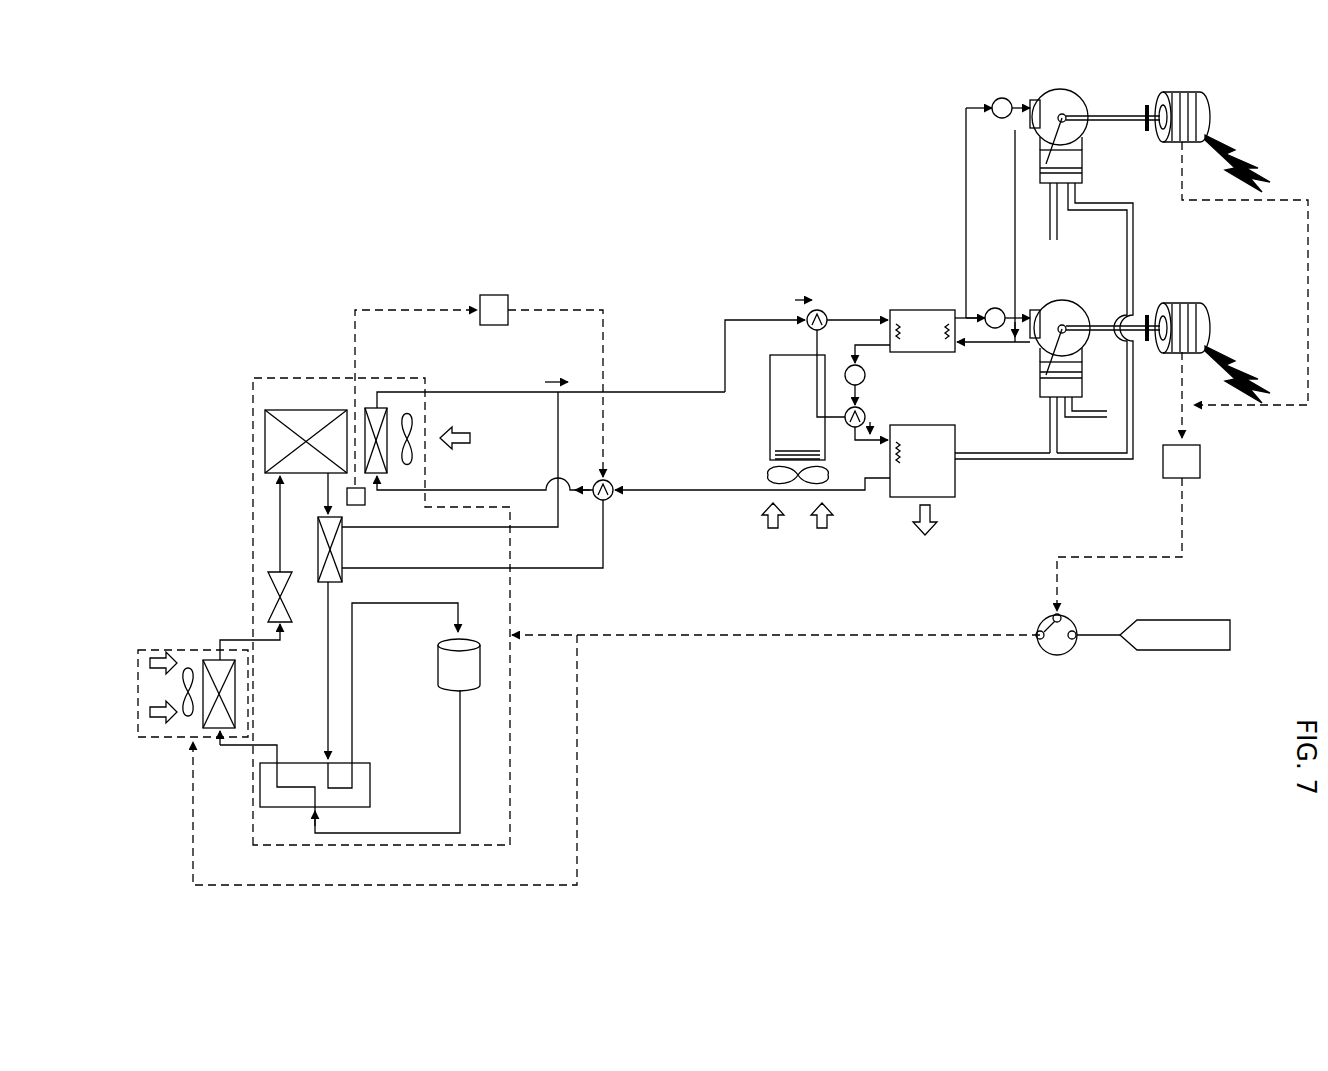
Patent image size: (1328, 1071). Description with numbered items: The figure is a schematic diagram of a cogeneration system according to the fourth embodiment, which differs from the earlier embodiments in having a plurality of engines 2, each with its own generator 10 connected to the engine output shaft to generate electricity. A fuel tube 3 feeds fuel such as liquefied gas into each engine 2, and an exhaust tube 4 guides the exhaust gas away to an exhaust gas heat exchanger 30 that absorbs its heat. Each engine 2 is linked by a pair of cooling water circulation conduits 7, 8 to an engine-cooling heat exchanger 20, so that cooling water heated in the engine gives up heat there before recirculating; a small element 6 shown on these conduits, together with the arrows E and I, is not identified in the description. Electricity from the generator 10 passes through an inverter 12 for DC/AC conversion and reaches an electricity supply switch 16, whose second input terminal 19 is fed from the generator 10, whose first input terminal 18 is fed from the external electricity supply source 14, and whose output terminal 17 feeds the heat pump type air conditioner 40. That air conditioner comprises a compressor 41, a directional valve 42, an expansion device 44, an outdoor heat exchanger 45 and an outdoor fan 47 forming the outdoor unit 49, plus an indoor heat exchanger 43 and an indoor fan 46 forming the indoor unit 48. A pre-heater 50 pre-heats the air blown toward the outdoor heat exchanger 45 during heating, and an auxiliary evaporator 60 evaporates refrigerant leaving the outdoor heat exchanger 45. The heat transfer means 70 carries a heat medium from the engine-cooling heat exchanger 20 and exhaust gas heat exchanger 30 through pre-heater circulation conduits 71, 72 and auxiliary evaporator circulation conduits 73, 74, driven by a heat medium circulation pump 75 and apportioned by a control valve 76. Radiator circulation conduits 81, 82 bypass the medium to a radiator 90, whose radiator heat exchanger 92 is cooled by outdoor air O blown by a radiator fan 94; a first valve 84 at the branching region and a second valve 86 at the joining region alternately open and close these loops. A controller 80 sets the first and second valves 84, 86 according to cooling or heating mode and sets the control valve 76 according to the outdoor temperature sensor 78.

The engine 2 is at (1068, 92).
The fuel tube 3 is at (1052, 240).
The exhaust tube 4 is at (1005, 460).
The temperature sensor 6 is at (1000, 98).
The cooling water circulation conduit 7 is at (1015, 185).
The cooling water circulation conduit 8 is at (966, 160).
The generator 10 is at (1178, 90).
The inverter 12 is at (1200, 455).
The external electricity supply source 14 is at (1183, 650).
The electricity supply switch 16 is at (1048, 655).
The output terminal 17 is at (1037, 632).
The first input terminal 18 is at (1074, 640).
The second input terminal 19 is at (1061, 617).
The engine-cooling heat exchanger 20 is at (907, 310).
The exhaust gas heat exchanger 30 is at (905, 497).
The heat pump type air conditioner 40 is at (176, 487).
The compressor 41 is at (440, 655).
The directional valve 42 is at (262, 807).
The indoor heat exchanger 43 is at (203, 728).
The expansion device 44 is at (268, 580).
The outdoor heat exchanger 45 is at (265, 440).
The indoor fan 46 is at (182, 660).
The outdoor fan 47 is at (407, 408).
The indoor unit 48 is at (195, 650).
The outdoor unit 49 is at (253, 392).
The pre-heater 50 is at (375, 408).
The auxiliary evaporator 60 is at (318, 550).
The heat transfer means 70 is at (617, 584).
The pre-heater circulation conduit 71 is at (735, 318).
The pre-heater circulation conduit 72 is at (665, 492).
The auxiliary evaporator circulation conduit 73 is at (583, 572).
The auxiliary evaporator circulation conduit 74 is at (558, 400).
The heat medium circulation pump 75 is at (865, 372).
The control valve 76 is at (612, 483).
The outdoor temperature sensor 78 is at (347, 497).
The controller 80 is at (490, 300).
The radiator circulation conduit 81 is at (838, 420).
The radiator circulation conduit 82 is at (812, 345).
The first valve 84 is at (865, 415).
The second valve 86 is at (824, 310).
The radiator 90 is at (765, 438).
The radiator heat exchanger 92 is at (770, 452).
The radiator fan 94 is at (808, 482).
The outdoor air O is at (470, 438).
The exhaust air E is at (940, 520).
The inside air I is at (148, 712).